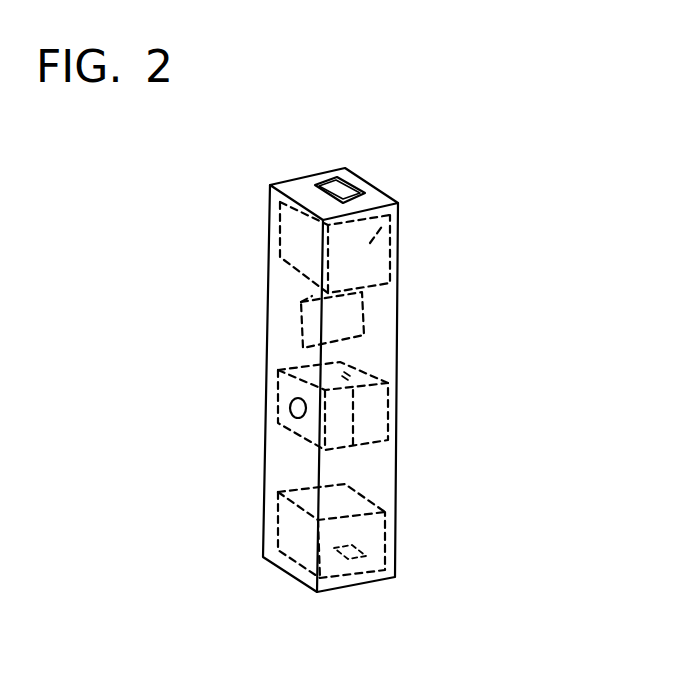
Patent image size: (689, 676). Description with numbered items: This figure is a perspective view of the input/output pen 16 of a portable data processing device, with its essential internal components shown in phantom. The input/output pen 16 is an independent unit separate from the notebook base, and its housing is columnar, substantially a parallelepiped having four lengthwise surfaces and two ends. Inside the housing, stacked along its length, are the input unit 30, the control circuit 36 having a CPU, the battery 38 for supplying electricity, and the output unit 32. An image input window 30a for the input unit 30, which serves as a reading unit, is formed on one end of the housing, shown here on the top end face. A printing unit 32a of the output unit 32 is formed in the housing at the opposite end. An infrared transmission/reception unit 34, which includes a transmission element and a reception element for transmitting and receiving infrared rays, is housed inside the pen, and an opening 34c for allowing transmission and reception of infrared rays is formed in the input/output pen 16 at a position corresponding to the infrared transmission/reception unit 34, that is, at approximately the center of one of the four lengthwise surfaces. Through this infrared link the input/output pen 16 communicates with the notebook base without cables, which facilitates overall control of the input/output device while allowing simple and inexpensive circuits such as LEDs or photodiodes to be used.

The input/output pen 16 is at (485, 580).
The input unit 30 is at (400, 200).
The image input window 30a is at (338, 182).
The output unit 32 is at (367, 565).
The printing unit 32a is at (342, 552).
The infrared transmission/reception unit 34 is at (265, 432).
The opening 34c is at (297, 418).
The control circuit 36 is at (364, 313).
The battery 38 is at (392, 393).